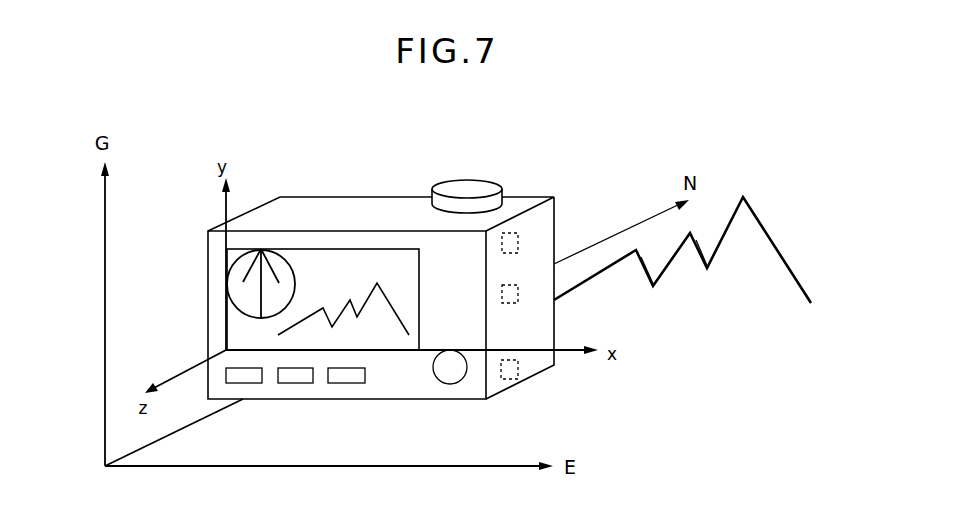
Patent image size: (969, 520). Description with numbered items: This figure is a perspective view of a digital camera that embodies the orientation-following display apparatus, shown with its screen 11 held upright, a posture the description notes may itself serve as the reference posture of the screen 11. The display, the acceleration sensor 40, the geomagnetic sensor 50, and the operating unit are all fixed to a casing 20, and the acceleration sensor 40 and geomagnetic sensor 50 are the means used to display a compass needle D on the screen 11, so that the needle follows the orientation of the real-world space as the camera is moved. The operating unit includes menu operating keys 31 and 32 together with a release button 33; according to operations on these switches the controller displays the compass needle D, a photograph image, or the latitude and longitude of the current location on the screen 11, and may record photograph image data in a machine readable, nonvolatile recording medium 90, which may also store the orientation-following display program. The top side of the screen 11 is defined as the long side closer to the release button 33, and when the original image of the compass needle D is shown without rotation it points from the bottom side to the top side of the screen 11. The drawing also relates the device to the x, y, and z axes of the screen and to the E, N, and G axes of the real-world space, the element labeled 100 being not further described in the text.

The casing 20 is at (554, 210).
The screen 11 is at (307, 267).
The compass needle D is at (282, 265).
The release button 33 is at (477, 183).
The menu operating key 32 is at (247, 384).
The menu operating key 31 is at (450, 385).
The geomagnetic sensor 50 is at (518, 243).
The acceleration sensor 40 is at (518, 295).
The recording medium 90 is at (518, 370).
The travel route 100 is at (760, 250).